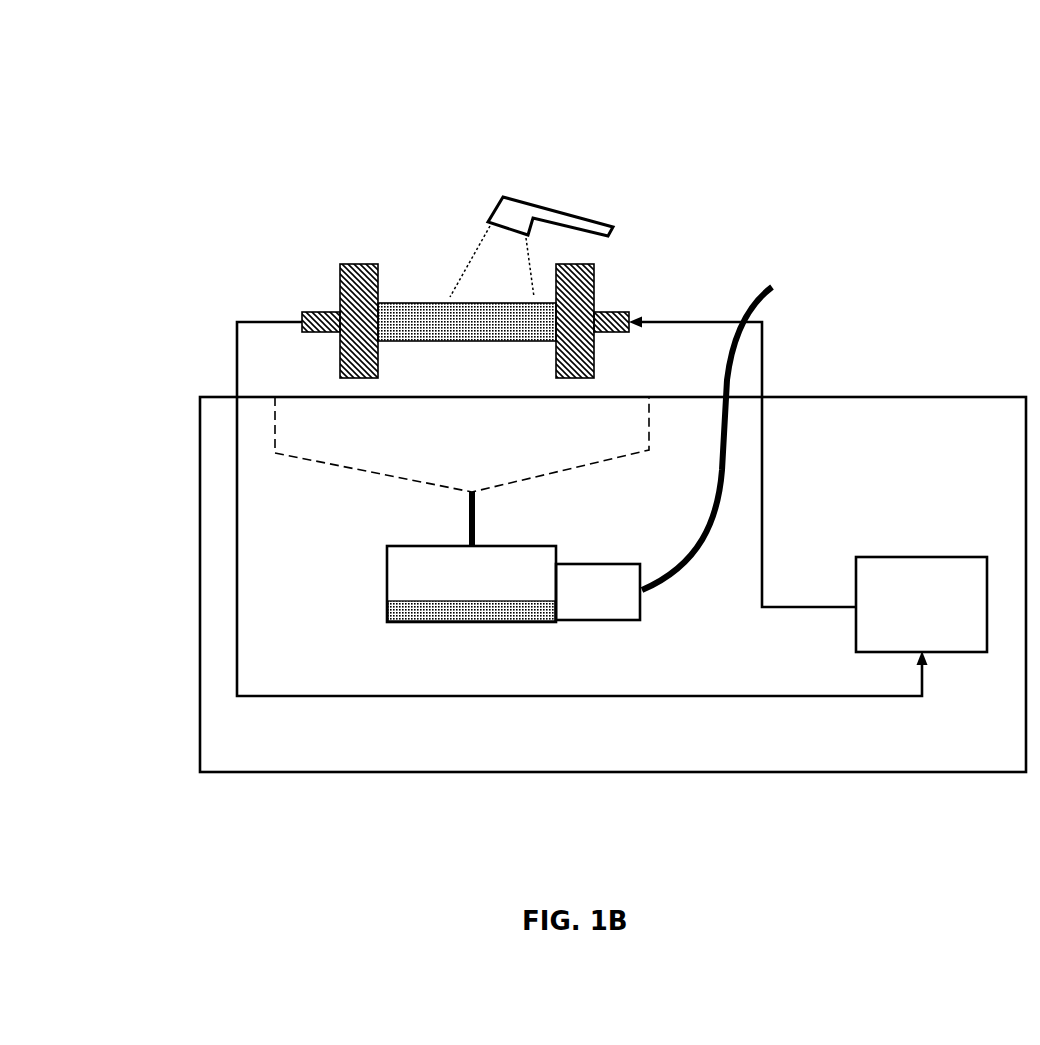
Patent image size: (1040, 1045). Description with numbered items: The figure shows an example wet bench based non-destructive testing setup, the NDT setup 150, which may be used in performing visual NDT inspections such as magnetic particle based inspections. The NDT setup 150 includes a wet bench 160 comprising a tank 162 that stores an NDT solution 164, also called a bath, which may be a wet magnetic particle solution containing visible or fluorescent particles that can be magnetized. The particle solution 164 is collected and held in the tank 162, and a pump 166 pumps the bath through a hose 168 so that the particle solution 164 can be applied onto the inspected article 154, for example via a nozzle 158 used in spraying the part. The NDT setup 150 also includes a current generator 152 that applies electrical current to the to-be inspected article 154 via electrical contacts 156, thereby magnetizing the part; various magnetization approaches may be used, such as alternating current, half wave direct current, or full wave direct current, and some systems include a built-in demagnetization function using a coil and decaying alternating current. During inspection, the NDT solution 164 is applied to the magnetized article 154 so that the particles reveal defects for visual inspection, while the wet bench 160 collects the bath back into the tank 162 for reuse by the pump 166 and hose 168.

The NDT setup 150 is at (94, 99).
The current generator 152 is at (939, 640).
The article 154 is at (442, 274).
The electrical contacts 156 is at (647, 298).
The nozzle 158 is at (551, 229).
The wet bench 160 is at (629, 760).
The tank 162 is at (442, 567).
The NDT solution 164 is at (435, 625).
The pump 166 is at (614, 564).
The hose 168 is at (707, 400).